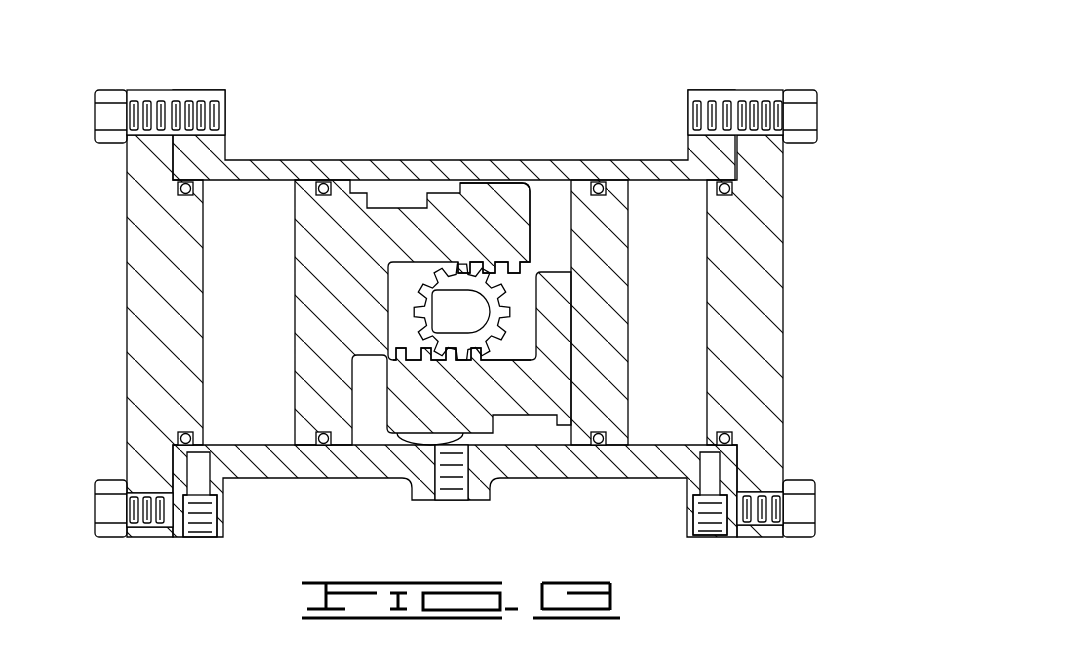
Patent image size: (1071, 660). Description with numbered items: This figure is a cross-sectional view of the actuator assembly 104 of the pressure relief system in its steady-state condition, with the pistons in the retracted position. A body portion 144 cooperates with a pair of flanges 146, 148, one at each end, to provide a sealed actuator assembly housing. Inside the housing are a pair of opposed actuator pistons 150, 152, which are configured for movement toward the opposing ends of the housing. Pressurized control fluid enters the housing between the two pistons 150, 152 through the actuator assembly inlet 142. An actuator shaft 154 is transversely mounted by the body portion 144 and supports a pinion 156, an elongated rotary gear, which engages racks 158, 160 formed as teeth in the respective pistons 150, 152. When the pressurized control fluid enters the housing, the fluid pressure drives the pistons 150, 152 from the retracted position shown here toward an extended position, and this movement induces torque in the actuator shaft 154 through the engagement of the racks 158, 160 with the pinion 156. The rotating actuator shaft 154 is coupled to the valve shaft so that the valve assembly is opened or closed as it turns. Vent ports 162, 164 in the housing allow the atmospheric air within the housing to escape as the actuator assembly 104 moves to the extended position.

The actuator assembly 104 is at (663, 67).
The actuator assembly inlet 142 is at (447, 500).
The body portion 144 is at (413, 168).
The flange 146 is at (147, 330).
The flange 148 is at (750, 247).
The actuator piston 150 is at (303, 193).
The actuator piston 152 is at (612, 212).
The actuator shaft 154 is at (452, 312).
The pinion 156 is at (507, 313).
The rack 158 is at (520, 268).
The rack 160 is at (390, 325).
The vent port 162 is at (205, 525).
The vent port 164 is at (703, 527).